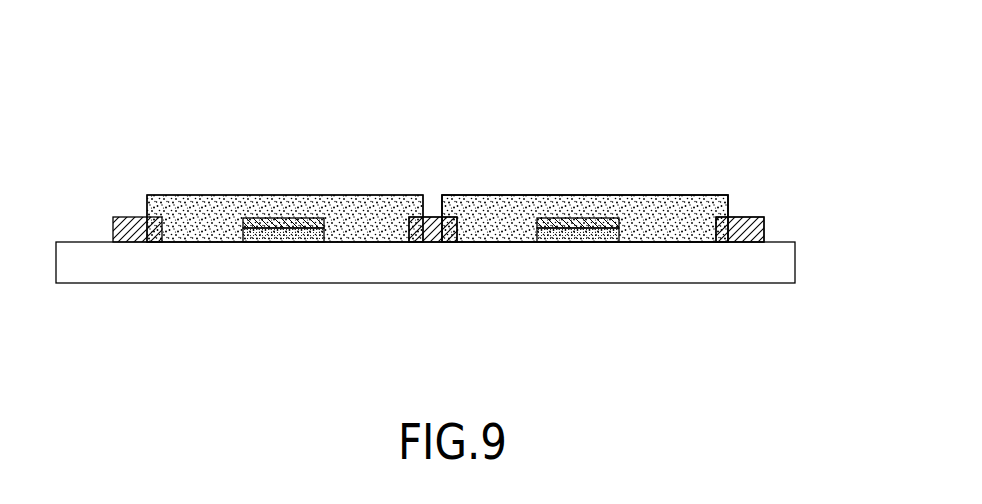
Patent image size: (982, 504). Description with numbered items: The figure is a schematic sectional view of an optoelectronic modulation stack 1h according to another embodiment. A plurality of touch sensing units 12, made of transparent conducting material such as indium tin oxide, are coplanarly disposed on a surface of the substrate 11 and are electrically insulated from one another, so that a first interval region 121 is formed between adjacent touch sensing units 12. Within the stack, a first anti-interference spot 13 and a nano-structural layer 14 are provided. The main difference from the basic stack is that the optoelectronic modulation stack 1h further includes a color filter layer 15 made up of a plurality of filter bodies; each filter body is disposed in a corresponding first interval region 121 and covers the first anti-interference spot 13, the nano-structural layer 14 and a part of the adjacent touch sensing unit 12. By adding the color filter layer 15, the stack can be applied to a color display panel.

The optoelectronic modulation stack 1h is at (176, 72).
The substrate 11 is at (787, 263).
The touch sensing unit 12 is at (137, 242).
The first interval region 121 is at (765, 135).
The first anti-interference spot 13 is at (274, 195).
The nano-structural layer 14 is at (285, 242).
The color filter layer 15 is at (205, 195).